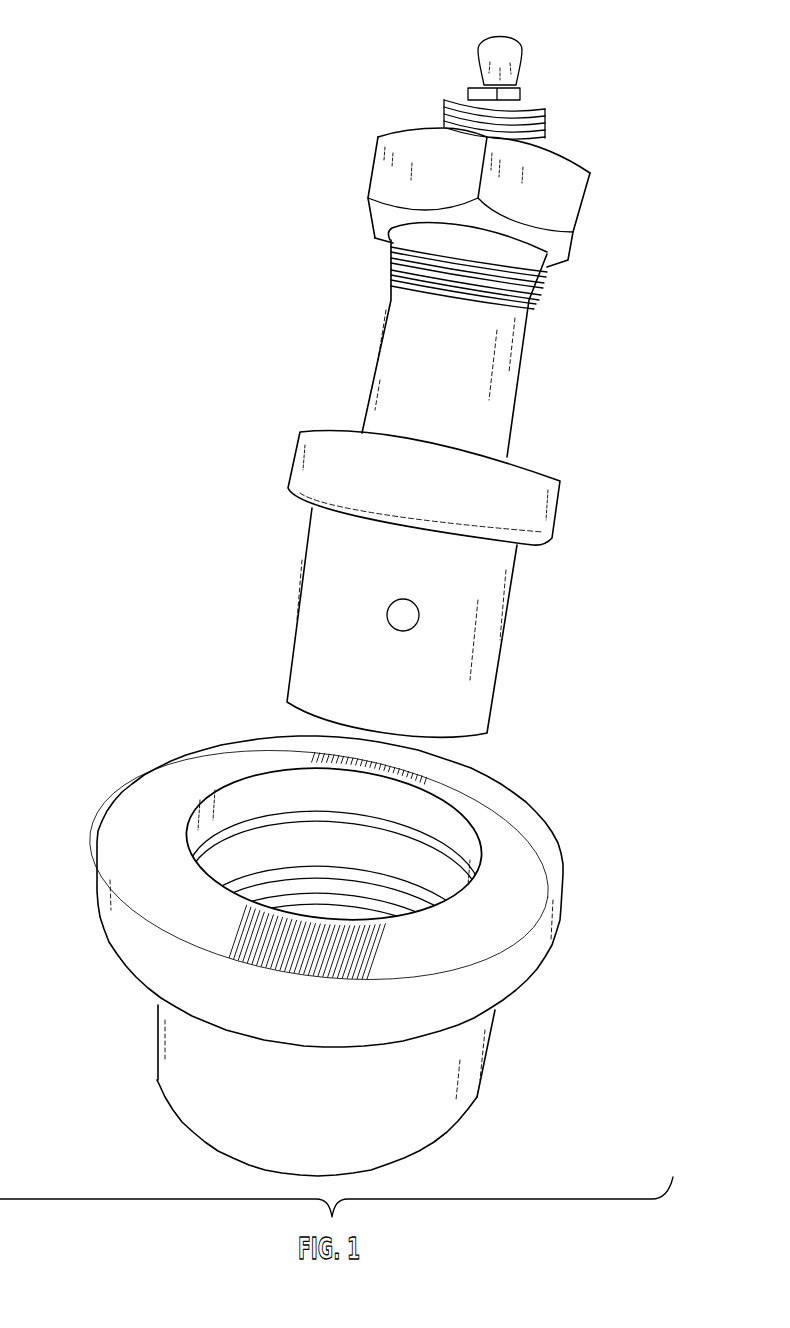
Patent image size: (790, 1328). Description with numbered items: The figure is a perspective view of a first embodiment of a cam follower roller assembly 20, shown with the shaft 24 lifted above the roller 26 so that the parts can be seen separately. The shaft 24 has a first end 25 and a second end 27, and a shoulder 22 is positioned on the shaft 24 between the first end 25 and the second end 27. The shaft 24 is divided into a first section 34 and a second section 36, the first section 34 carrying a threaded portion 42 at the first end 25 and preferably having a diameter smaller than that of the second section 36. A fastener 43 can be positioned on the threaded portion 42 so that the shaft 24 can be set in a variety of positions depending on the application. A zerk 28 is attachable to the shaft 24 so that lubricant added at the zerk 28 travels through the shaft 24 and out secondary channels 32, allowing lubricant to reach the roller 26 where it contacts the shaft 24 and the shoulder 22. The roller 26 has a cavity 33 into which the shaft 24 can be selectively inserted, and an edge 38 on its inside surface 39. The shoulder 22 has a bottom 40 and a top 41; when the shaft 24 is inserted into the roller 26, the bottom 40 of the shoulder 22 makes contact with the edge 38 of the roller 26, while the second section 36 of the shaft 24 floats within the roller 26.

The cam follower roller assembly 20 is at (257, 402).
The shoulder 22 is at (317, 465).
The shaft 24 is at (503, 372).
The first end 25 is at (545, 113).
The roller 26 is at (137, 823).
The second end 27 is at (487, 735).
The zerk 28 is at (510, 53).
The secondary channels 32 is at (410, 618).
The cavity 33 is at (393, 902).
The first section 34 is at (388, 353).
The second section 36 is at (320, 625).
The edge 38 is at (258, 822).
The inside surface 39 is at (313, 853).
The bottom 40 is at (307, 500).
The top 41 is at (547, 462).
The threaded portion 42 is at (447, 113).
The fastener 43 is at (383, 175).